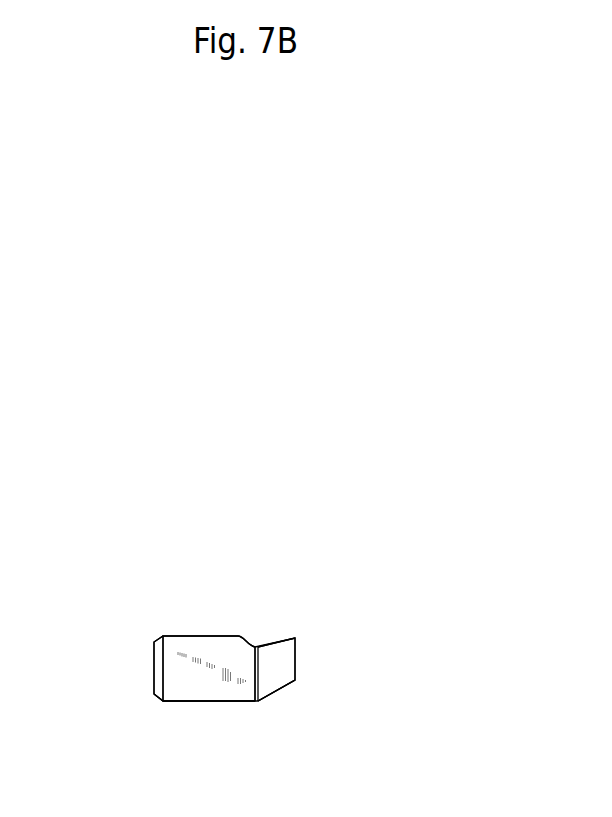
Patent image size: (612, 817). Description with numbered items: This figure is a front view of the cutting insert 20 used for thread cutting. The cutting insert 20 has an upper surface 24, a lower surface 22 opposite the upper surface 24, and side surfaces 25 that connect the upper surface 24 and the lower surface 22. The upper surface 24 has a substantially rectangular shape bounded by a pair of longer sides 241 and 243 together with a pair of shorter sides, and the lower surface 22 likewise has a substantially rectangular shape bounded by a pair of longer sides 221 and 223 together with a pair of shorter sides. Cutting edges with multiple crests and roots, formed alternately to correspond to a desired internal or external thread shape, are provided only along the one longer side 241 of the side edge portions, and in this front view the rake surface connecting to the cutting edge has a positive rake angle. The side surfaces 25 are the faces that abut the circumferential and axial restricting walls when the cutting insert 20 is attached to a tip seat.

The cutting insert 20 is at (372, 645).
The lower surface 22 is at (222, 708).
The longer side of lower surface 221 is at (298, 682).
The longer side of lower surface 223 is at (154, 696).
The upper surface 24 is at (204, 630).
The longer side of upper surface 241 is at (295, 638).
The longer side of upper surface 243 is at (154, 641).
The side surfaces 25 is at (297, 657).